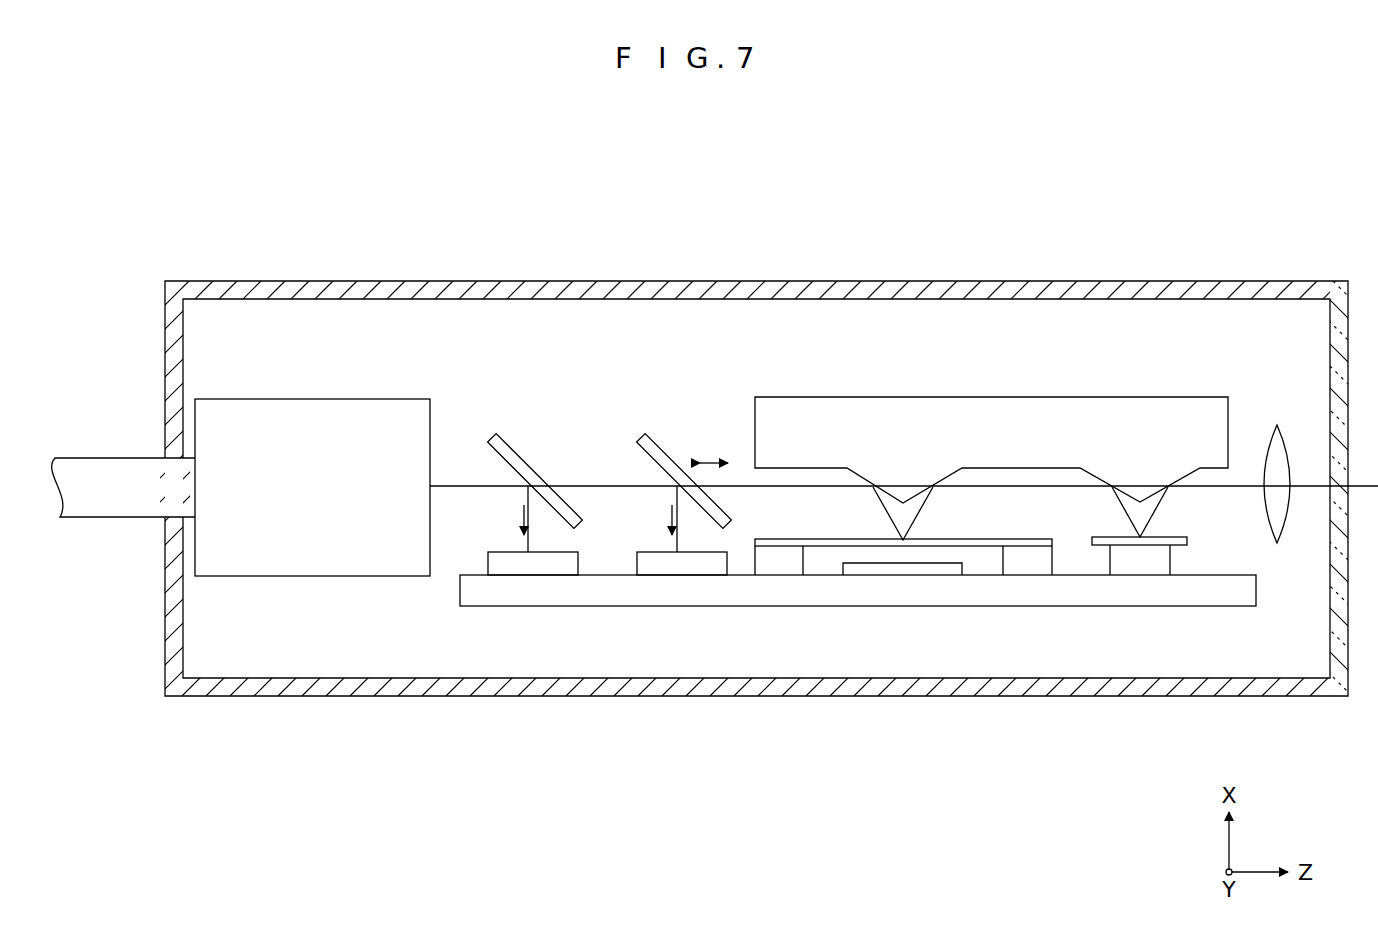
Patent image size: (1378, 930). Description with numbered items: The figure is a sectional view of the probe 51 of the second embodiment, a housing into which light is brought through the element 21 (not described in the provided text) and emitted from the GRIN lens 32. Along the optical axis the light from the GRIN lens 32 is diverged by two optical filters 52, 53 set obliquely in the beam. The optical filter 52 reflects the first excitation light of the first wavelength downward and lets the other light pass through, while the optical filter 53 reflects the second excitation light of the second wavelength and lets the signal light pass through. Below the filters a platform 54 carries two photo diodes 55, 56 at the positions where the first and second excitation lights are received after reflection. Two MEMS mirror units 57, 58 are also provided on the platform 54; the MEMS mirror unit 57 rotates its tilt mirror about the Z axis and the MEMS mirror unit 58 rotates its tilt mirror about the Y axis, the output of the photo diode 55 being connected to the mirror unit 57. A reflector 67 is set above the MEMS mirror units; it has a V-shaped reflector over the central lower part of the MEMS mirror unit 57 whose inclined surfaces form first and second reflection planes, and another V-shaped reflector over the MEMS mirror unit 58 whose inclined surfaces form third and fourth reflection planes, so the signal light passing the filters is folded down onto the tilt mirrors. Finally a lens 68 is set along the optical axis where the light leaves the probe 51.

The optical fiber 21 is at (117, 463).
The GRIN lens 32 is at (297, 399).
The probe 51 is at (1105, 250).
The optical filter 52 is at (500, 437).
The optical filter 53 is at (650, 437).
The platform 54 is at (767, 590).
The photo diode 55 is at (535, 570).
The photo diode 56 is at (685, 570).
The MEMS mirror unit 57 is at (885, 570).
The MEMS mirror unit 58 is at (1158, 567).
The reflector 67 is at (885, 427).
The lens 68 is at (1277, 425).